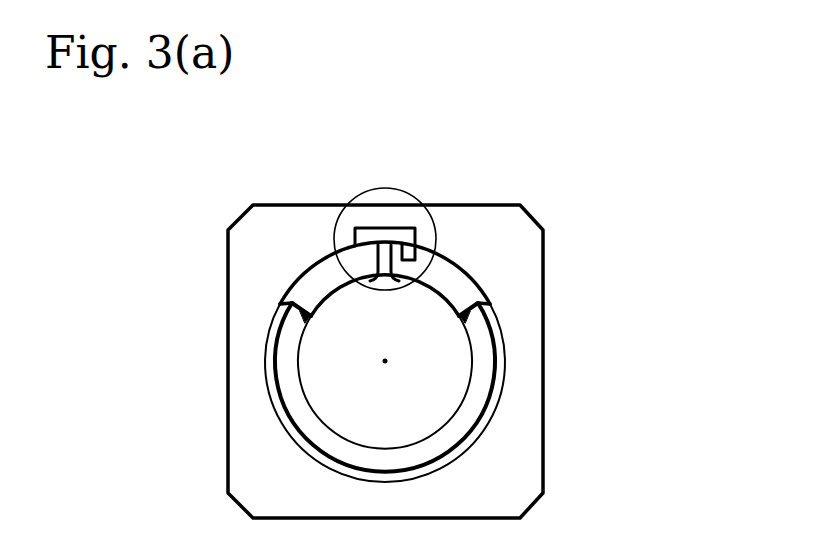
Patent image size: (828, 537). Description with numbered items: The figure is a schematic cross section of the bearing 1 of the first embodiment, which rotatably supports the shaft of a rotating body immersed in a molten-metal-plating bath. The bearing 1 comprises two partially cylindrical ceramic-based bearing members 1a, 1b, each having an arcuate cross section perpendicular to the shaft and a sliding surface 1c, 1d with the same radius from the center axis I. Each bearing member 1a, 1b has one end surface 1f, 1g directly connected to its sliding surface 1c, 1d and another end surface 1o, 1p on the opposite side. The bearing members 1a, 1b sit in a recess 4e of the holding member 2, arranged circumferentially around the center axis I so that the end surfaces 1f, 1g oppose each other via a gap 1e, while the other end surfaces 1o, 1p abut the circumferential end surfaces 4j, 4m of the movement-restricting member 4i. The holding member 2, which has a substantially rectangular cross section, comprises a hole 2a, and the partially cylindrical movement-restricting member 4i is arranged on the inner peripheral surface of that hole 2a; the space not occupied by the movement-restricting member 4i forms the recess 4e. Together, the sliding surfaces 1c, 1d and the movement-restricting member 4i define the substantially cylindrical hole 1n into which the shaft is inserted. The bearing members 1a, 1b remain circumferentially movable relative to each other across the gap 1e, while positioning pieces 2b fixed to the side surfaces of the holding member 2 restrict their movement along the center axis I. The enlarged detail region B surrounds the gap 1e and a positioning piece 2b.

The bearing 1 is at (598, 187).
The bearing member 1a is at (308, 282).
The bearing member 1b is at (492, 292).
The sliding surface 1c is at (302, 292).
The sliding surface 1d is at (447, 252).
The gap 1e is at (382, 238).
The end surface 1f is at (373, 268).
The end surface 1g is at (396, 268).
The hole 1n is at (455, 380).
The other end surface 1o is at (296, 288).
The other end surface 1p is at (481, 308).
The holding member 2 is at (598, 321).
The hole 2a is at (442, 266).
The positioning piece 2b is at (410, 230).
The recess 4e is at (291, 305).
The movement-restricting member 4i is at (472, 415).
The end surface 4j is at (293, 318).
The end surface 4m is at (474, 318).
The detail region B is at (385, 188).
The center axis I is at (383, 363).